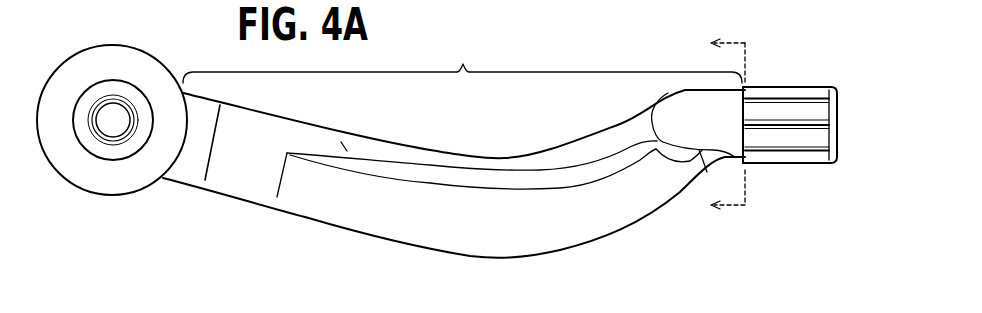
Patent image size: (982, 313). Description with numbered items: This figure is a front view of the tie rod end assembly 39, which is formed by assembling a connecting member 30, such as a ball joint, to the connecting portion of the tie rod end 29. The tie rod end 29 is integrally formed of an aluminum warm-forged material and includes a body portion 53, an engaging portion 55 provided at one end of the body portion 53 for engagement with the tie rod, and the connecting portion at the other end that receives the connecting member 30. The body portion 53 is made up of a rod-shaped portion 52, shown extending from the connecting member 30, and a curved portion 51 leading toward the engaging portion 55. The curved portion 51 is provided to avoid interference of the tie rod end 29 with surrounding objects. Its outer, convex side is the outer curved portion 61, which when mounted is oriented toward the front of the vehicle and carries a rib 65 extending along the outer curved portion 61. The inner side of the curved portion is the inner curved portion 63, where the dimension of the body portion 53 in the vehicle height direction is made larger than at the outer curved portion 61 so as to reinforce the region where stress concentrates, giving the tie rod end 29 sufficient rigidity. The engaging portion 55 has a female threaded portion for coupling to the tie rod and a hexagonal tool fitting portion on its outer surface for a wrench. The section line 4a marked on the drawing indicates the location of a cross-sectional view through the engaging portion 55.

The connecting member 30 is at (128, 63).
The tie rod end assembly 39 is at (583, 58).
The body portion 53 is at (462, 58).
The tie rod end 29 is at (608, 133).
The curved portion 51 is at (570, 238).
The rod-shaped portion 52 is at (338, 193).
The engaging portion 55 is at (788, 115).
The outer curved portion 61 is at (510, 242).
The inner curved portion 63 is at (468, 167).
The rib 65 is at (493, 188).
The section line 4a is at (744, 127).